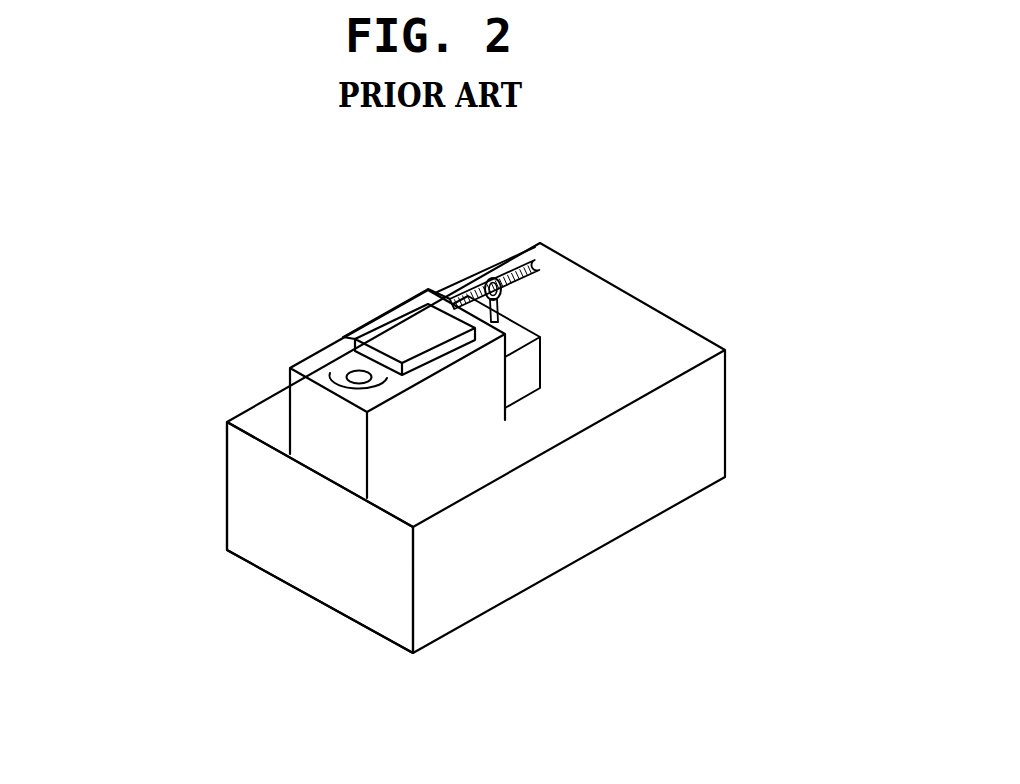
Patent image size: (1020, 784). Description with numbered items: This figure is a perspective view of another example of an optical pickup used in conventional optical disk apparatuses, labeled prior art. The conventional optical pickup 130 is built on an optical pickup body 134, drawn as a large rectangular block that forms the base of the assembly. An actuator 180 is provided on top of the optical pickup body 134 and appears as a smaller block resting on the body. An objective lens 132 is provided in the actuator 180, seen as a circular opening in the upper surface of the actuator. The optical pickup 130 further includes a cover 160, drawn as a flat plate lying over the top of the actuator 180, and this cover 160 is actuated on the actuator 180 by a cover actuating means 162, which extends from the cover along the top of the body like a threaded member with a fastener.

The optical pickup 130 is at (547, 236).
The objective lens 132 is at (350, 373).
The optical pickup body 134 is at (320, 562).
The cover 160 is at (408, 321).
The cover actuating means 162 is at (518, 268).
The actuator 180 is at (307, 407).